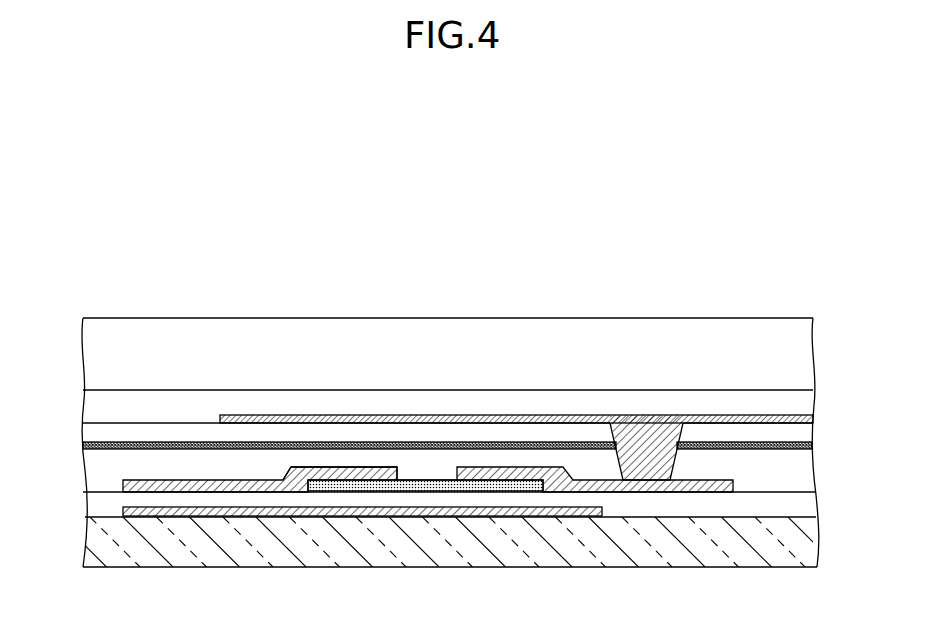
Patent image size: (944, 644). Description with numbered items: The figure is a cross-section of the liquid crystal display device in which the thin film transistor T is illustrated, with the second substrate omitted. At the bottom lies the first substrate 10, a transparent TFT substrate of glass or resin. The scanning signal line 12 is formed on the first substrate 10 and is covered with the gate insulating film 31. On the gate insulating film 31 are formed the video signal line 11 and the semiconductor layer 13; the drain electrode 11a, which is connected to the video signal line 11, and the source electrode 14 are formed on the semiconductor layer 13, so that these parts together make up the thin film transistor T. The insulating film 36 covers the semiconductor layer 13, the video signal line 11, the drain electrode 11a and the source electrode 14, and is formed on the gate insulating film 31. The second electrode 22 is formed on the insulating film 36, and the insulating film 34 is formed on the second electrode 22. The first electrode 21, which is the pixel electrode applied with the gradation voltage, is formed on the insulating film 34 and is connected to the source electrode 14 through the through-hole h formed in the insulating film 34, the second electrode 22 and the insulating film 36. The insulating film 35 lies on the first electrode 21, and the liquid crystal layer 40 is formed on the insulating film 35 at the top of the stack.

The first substrate 10 is at (86, 541).
The video signal line 11 is at (198, 488).
The drain electrode 11a is at (342, 468).
The scanning signal line 12 is at (350, 516).
The semiconductor layer 13 is at (427, 491).
The source electrode 14 is at (508, 468).
The first electrode 21 is at (808, 421).
The second electrode 22 is at (808, 447).
The gate insulating film 31 is at (87, 506).
The insulating film 34 is at (86, 433).
The insulating film 35 is at (86, 405).
The insulating film 36 is at (86, 469).
The liquid crystal layer 40 is at (85, 353).
The through-hole h is at (670, 455).
The thin film transistor T is at (425, 462).